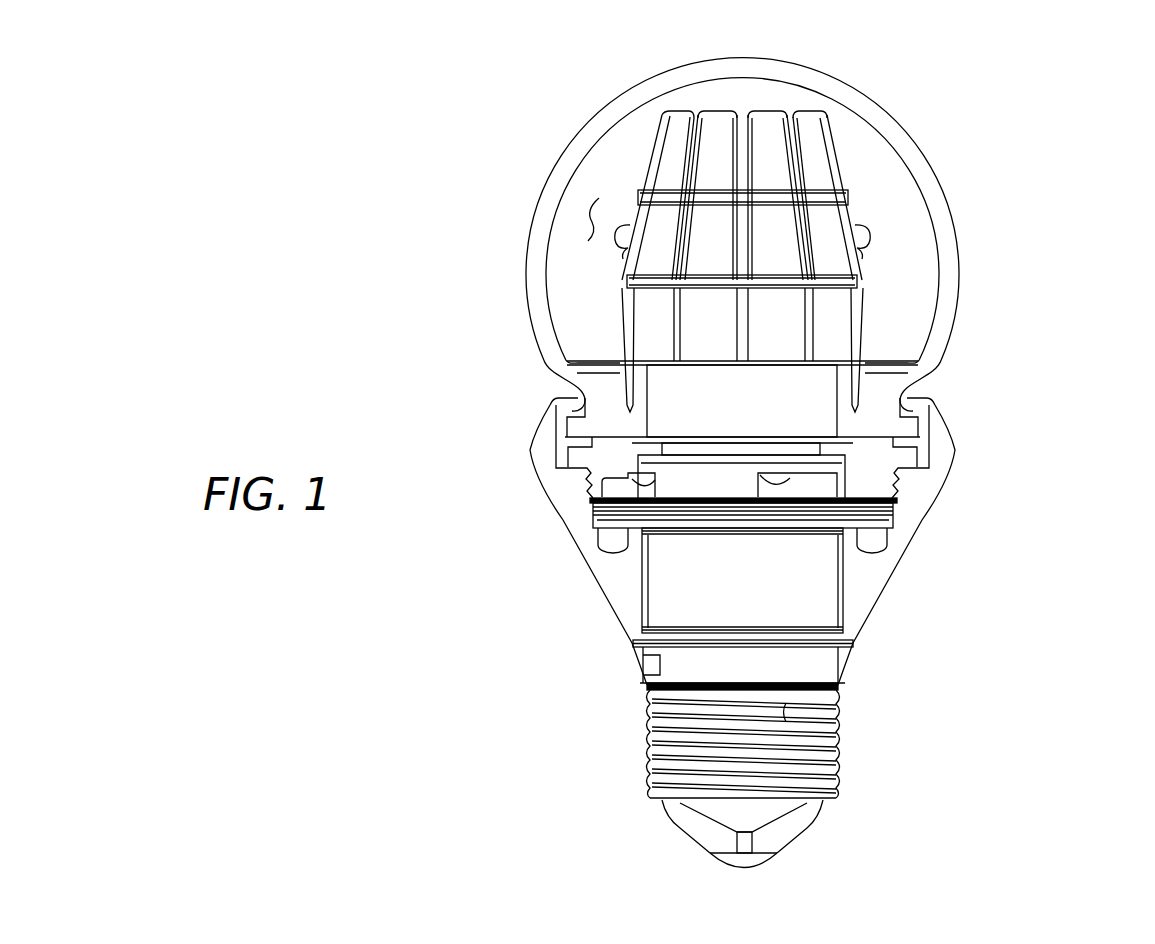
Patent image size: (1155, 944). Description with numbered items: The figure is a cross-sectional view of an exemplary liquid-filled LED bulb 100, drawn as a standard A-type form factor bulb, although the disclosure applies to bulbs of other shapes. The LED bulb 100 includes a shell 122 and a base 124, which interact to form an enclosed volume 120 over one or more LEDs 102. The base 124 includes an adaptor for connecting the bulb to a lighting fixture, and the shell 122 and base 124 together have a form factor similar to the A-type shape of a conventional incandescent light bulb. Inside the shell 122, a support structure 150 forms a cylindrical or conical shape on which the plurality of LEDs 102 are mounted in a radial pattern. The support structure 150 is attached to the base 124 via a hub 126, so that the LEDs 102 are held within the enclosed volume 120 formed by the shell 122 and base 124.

The LED bulb 100 is at (456, 760).
The LED 102 is at (867, 222).
The enclosed volume 120 is at (587, 225).
The shell 122 is at (965, 264).
The base 124 is at (868, 582).
The hub 126 is at (878, 476).
The support structure 150 is at (772, 165).